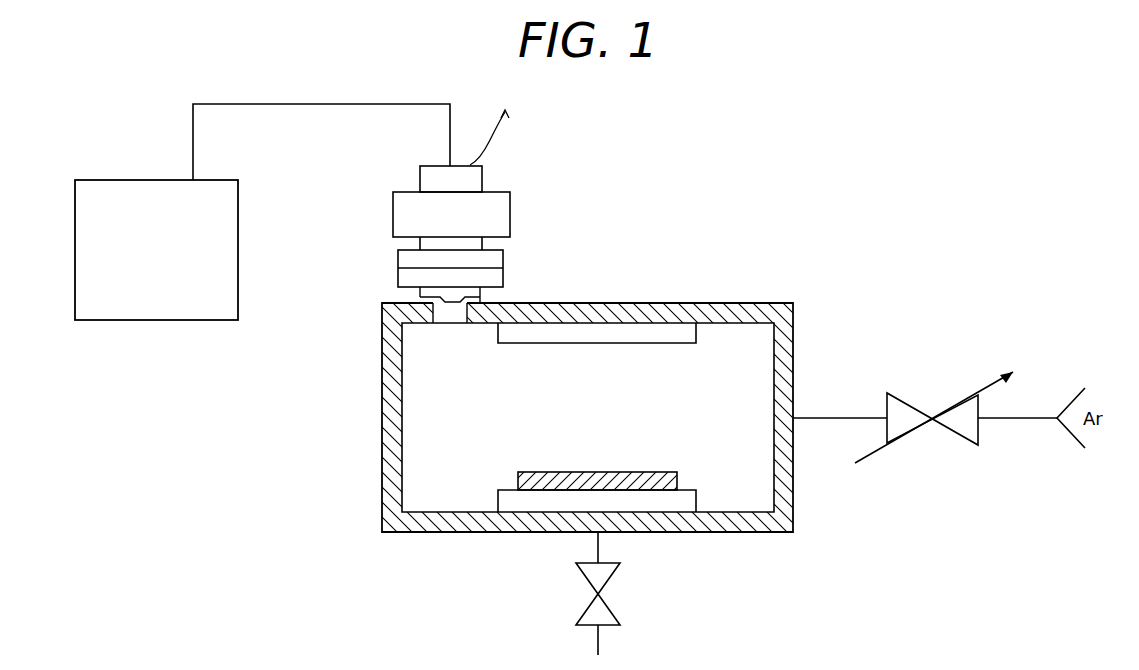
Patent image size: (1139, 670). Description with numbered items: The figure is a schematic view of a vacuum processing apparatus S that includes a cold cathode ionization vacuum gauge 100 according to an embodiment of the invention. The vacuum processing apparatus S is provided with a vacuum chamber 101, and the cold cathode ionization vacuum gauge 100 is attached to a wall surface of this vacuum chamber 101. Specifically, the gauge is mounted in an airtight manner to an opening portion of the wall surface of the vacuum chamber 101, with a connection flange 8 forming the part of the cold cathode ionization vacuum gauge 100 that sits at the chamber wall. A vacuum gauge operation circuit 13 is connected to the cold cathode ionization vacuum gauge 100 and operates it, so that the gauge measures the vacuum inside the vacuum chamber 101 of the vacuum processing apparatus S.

The cold cathode ionization vacuum gauge 100 is at (545, 181).
The connection flange 8 is at (503, 258).
The vacuum gauge operation circuit 13 is at (238, 207).
The vacuum chamber 101 is at (793, 332).
The vacuum processing apparatus S is at (765, 272).